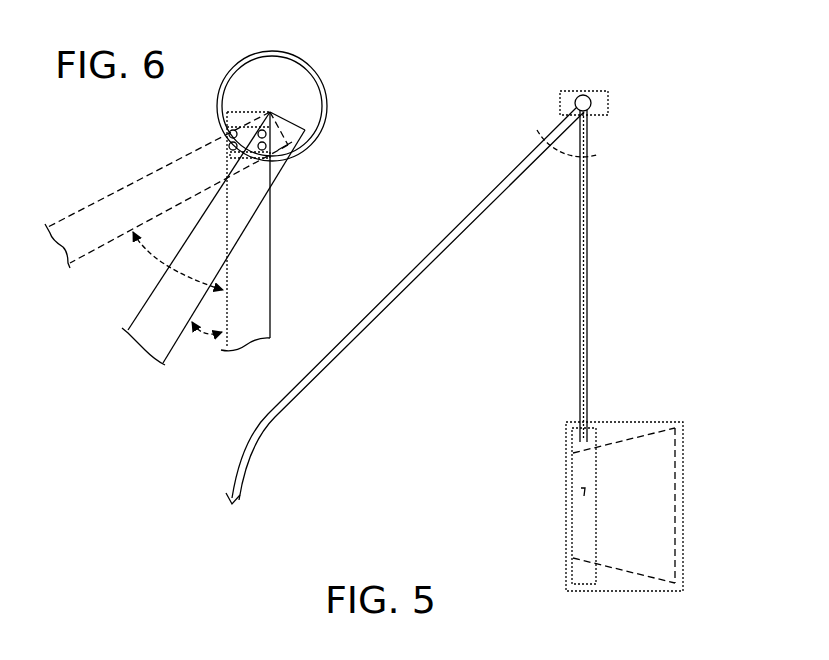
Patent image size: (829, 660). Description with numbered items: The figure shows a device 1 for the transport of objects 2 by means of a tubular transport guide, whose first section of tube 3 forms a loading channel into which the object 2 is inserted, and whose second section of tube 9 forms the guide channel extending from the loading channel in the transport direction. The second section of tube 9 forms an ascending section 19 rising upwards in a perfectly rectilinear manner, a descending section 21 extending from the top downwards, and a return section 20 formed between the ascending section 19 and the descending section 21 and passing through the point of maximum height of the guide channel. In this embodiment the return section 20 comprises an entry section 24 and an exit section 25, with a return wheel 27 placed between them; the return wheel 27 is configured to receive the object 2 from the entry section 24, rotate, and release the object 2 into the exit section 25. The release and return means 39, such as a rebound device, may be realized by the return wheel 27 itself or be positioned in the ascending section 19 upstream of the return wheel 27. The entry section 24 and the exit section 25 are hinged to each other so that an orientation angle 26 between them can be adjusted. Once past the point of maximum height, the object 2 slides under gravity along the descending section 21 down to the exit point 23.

In FIG. 5, the device for transport of objects 1 is at (640, 373).
In FIG. 5, the object 2 is at (581, 499).
In FIG. 5, the first section of tube 3 is at (587, 462).
In FIG. 5, the second section of tube 9 is at (587, 282).
In FIG. 5, the ascending section 19 is at (587, 220).
In FIG. 5, the return section 20 is at (632, 110).
In FIG. 5, the descending section 21 is at (403, 295).
In FIG. 5, the exit point 23 is at (237, 517).
In FIG. 6, the entry section 24 is at (255, 255).
In FIG. 6, the exit section 25 is at (160, 187).
In FIG. 6, the orientation angle 26 is at (158, 265).
In FIG. 6, the return wheel 27 is at (323, 112).
In FIG. 5, the return wheel 27 is at (590, 92).
In FIG. 6, the release and return means 39 is at (255, 163).
In FIG. 5, the release and return means 39 is at (600, 113).